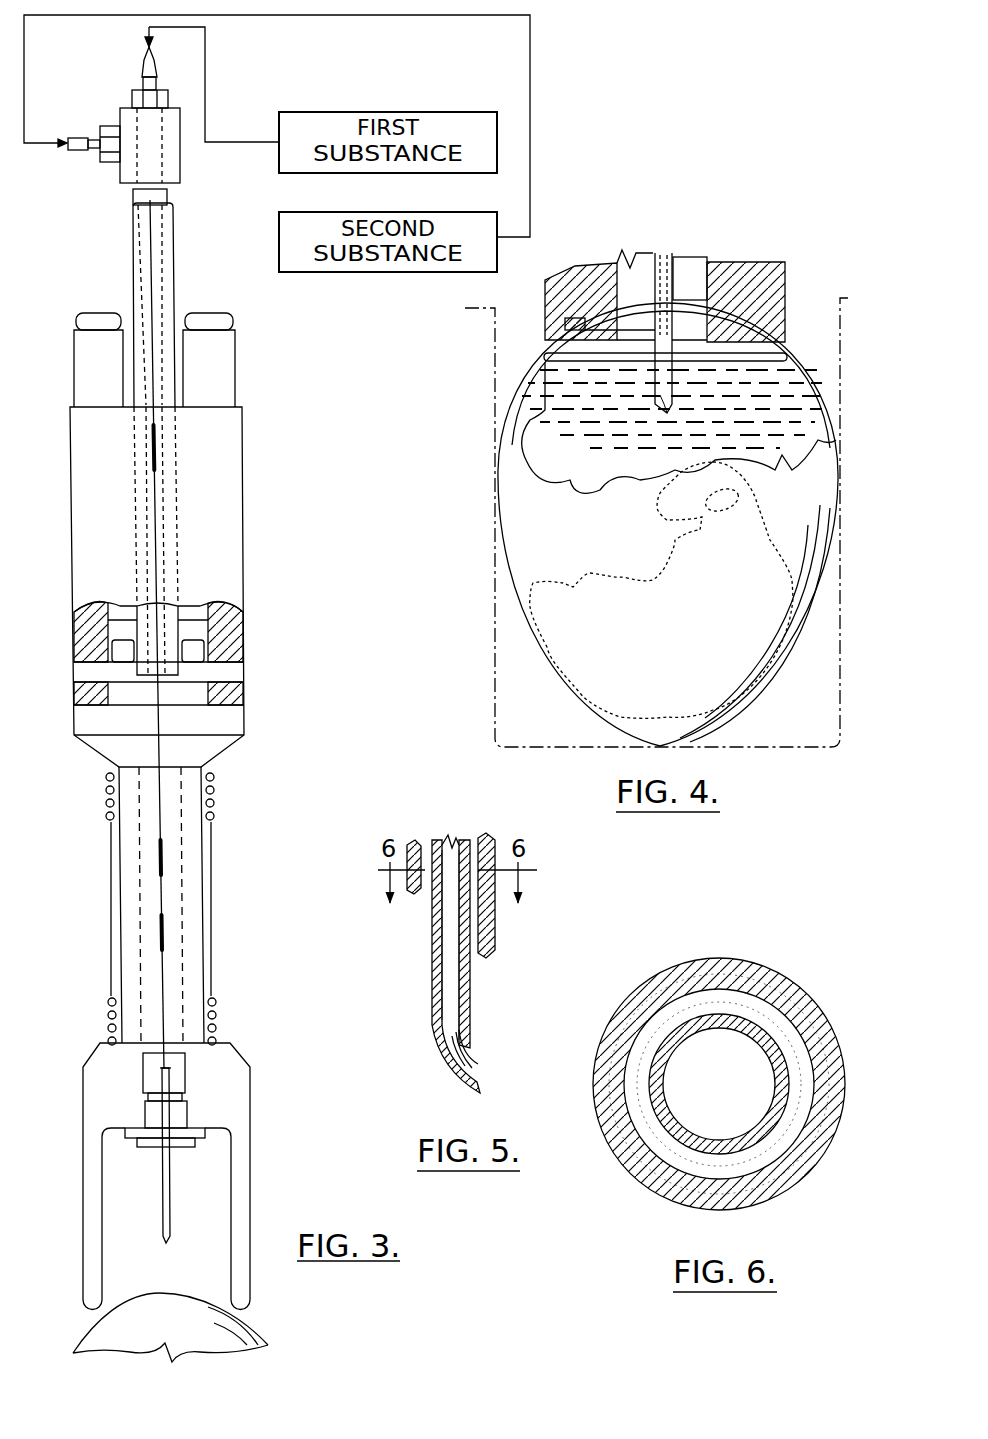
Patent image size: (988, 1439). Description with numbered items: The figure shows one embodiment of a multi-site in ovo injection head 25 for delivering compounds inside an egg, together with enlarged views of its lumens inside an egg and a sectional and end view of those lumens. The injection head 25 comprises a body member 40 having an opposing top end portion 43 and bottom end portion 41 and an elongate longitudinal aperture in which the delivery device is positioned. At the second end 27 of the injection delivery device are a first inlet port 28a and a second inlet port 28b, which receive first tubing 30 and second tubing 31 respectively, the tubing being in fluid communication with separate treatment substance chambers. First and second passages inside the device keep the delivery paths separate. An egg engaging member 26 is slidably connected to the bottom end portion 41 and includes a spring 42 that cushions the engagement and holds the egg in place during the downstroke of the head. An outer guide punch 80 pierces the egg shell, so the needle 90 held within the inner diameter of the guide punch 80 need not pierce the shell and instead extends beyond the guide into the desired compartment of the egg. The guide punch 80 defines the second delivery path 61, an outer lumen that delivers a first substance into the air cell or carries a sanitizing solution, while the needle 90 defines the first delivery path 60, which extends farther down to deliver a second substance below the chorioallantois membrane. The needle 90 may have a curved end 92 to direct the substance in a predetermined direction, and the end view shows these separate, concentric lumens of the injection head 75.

In FIG. 3, the multi-site in ovo injection head 25 is at (272, 519).
In FIG. 4, the multi-site in ovo injection head 25 is at (767, 281).
In FIG. 3, the egg engaging member 26 is at (85, 1258).
In FIG. 3, the second end 27 is at (120, 111).
In FIG. 3, the first inlet port 28a is at (146, 49).
In FIG. 3, the second inlet port 28b is at (84, 153).
In FIG. 3, the first tubing 30 is at (205, 75).
In FIG. 3, the second tubing 31 is at (529, 111).
In FIG. 3, the body member 40 is at (122, 914).
In FIG. 3, the bottom end portion 41 is at (125, 1111).
In FIG. 3, the spring 42 is at (215, 801).
In FIG. 3, the top end portion 43 is at (181, 165).
In FIG. 5, the first delivery path 60 is at (479, 1060).
In FIG. 6, the first delivery path 60 is at (800, 1110).
In FIG. 4, the second delivery path 61 is at (640, 351).
In FIG. 5, the second delivery path 61 is at (421, 900).
In FIG. 6, the second delivery path 61 is at (773, 1023).
In FIG. 5, the injection head 75 is at (543, 894).
In FIG. 3, the outer guide punch 80 is at (172, 1221).
In FIG. 4, the outer guide punch 80 is at (548, 290).
In FIG. 5, the outer guide punch 80 is at (496, 925).
In FIG. 6, the outer guide punch 80 is at (822, 1053).
In FIG. 4, the needle 90 is at (548, 333).
In FIG. 5, the needle 90 is at (472, 992).
In FIG. 6, the needle 90 is at (723, 1024).
In FIG. 4, the curved end 92 is at (690, 428).